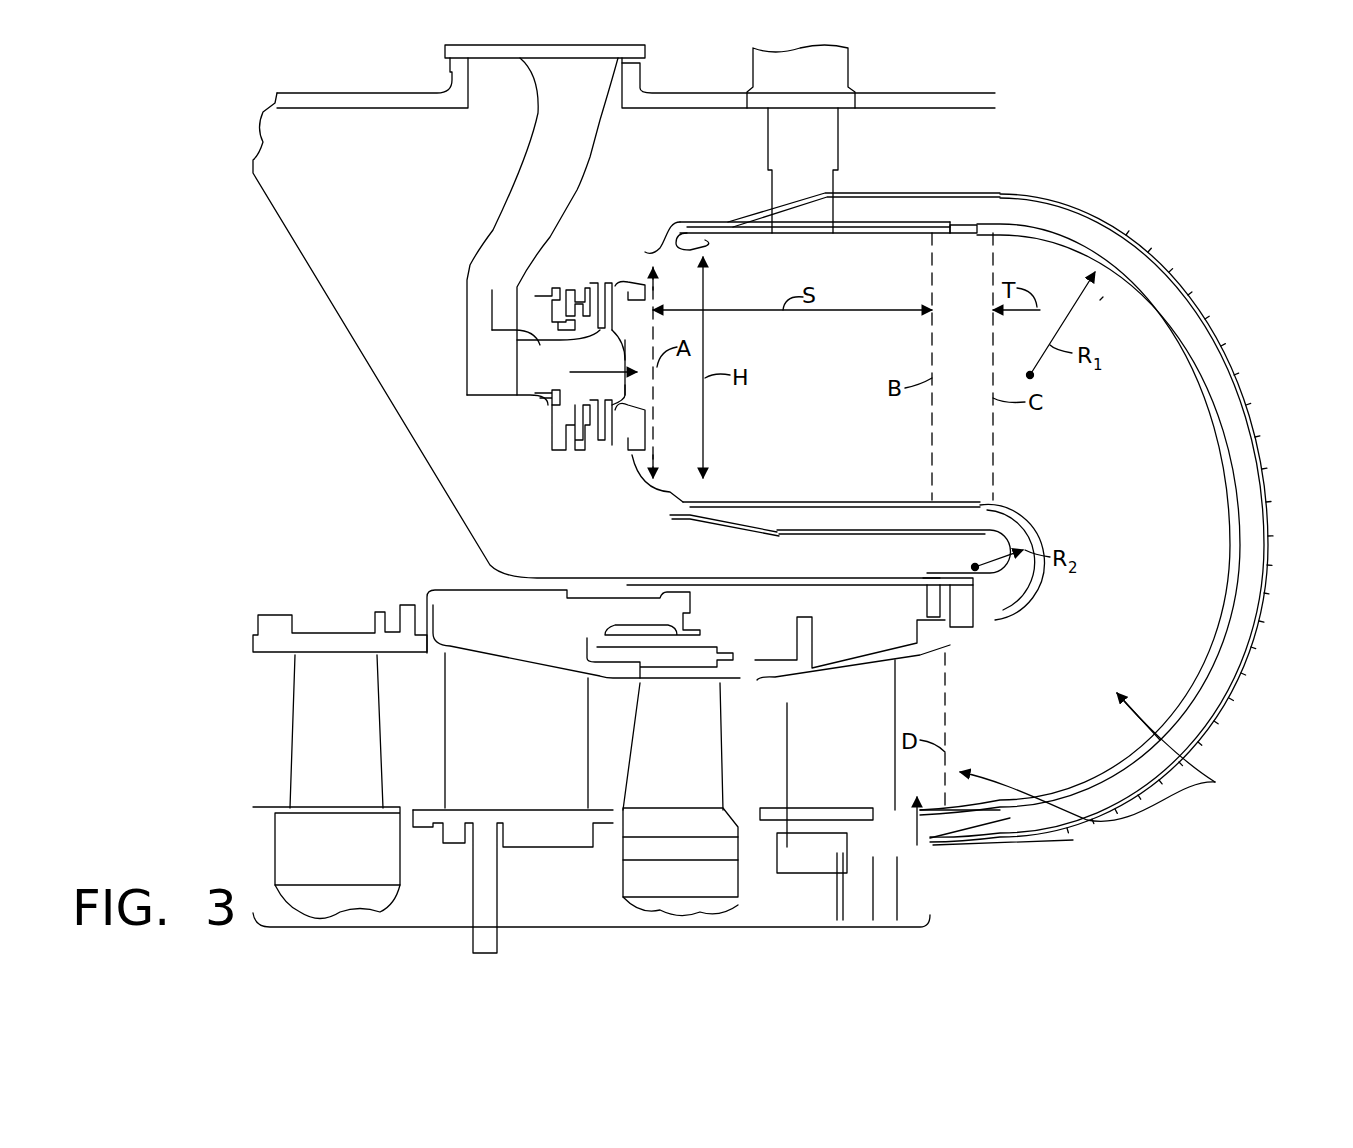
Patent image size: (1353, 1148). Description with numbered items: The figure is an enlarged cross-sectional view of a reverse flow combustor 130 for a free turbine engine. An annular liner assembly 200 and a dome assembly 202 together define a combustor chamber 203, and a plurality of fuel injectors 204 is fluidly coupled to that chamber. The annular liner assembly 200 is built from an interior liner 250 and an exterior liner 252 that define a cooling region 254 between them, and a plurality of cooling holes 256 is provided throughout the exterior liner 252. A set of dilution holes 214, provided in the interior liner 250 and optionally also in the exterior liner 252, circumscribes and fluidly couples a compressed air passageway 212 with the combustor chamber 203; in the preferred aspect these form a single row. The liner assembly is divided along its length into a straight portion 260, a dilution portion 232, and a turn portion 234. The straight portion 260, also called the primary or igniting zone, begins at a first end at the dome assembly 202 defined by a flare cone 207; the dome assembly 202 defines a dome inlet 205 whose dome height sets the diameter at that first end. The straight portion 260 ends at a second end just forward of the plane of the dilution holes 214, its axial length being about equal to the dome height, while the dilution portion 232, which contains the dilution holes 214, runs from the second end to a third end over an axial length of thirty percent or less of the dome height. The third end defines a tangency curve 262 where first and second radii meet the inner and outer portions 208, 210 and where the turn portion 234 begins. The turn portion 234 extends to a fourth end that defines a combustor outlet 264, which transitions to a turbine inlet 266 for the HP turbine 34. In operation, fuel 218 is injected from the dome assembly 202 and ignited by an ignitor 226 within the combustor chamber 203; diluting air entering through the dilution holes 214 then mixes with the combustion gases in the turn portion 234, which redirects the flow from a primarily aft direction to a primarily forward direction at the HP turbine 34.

The HP turbine 34 is at (615, 930).
The reverse flow combustor 130 is at (1103, 297).
The annular liner assembly 200 is at (1124, 518).
The dome assembly 202 is at (680, 217).
The combustor chamber 203 is at (846, 404).
The fuel injectors 204 is at (477, 317).
The dome inlet 205 is at (617, 323).
The flare cone 207 is at (633, 460).
The inner portion 208 is at (833, 507).
The outer portion 210 is at (860, 230).
The compressed air passageway 212 is at (1002, 142).
The dilution holes 214 is at (953, 300).
The fuel 218 is at (517, 240).
The ignitor 226 is at (822, 172).
The dilution portion 232 is at (957, 223).
The turn portion 234 is at (1114, 757).
The interior liner 250 is at (1213, 670).
The exterior liner 252 is at (1217, 737).
The cooling region 254 is at (1233, 440).
The cooling holes 256 is at (1205, 317).
The straight portion 260 is at (748, 455).
The tangency curve 262 is at (993, 235).
The combustor outlet 264 is at (1117, 818).
The turbine inlet 266 is at (920, 833).